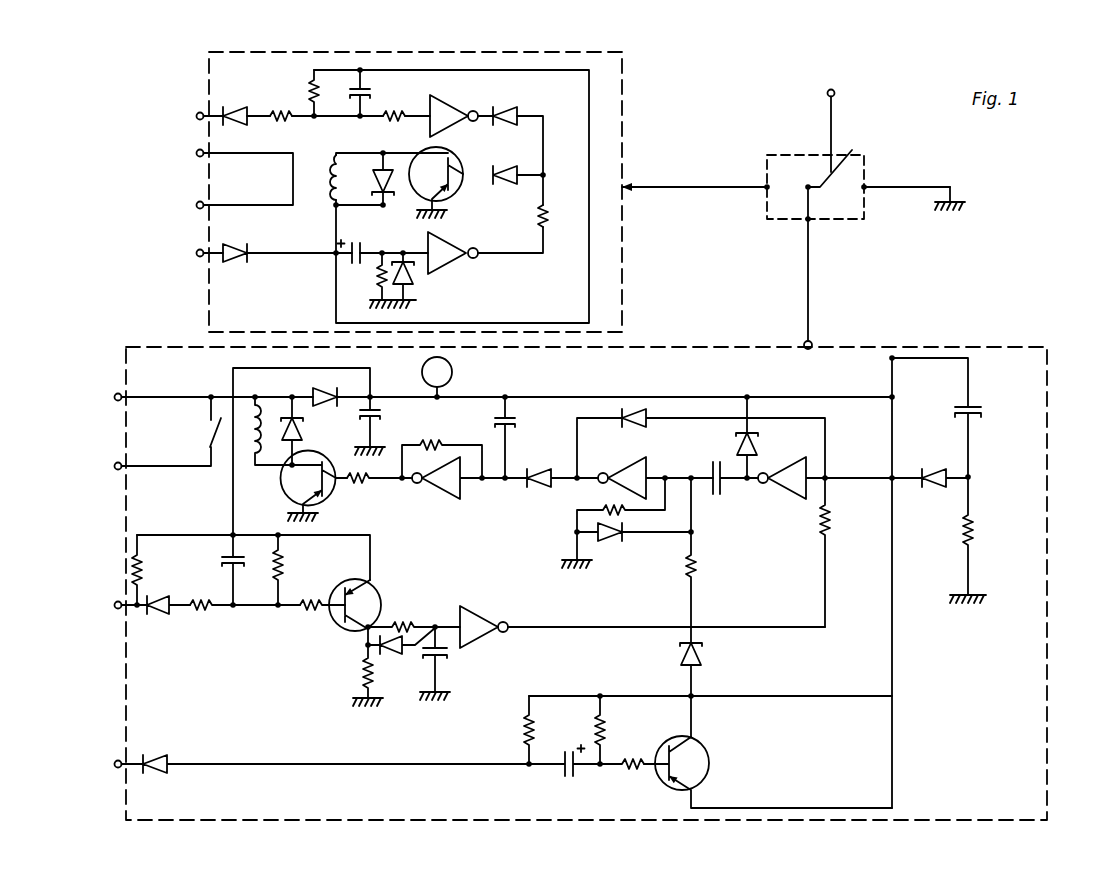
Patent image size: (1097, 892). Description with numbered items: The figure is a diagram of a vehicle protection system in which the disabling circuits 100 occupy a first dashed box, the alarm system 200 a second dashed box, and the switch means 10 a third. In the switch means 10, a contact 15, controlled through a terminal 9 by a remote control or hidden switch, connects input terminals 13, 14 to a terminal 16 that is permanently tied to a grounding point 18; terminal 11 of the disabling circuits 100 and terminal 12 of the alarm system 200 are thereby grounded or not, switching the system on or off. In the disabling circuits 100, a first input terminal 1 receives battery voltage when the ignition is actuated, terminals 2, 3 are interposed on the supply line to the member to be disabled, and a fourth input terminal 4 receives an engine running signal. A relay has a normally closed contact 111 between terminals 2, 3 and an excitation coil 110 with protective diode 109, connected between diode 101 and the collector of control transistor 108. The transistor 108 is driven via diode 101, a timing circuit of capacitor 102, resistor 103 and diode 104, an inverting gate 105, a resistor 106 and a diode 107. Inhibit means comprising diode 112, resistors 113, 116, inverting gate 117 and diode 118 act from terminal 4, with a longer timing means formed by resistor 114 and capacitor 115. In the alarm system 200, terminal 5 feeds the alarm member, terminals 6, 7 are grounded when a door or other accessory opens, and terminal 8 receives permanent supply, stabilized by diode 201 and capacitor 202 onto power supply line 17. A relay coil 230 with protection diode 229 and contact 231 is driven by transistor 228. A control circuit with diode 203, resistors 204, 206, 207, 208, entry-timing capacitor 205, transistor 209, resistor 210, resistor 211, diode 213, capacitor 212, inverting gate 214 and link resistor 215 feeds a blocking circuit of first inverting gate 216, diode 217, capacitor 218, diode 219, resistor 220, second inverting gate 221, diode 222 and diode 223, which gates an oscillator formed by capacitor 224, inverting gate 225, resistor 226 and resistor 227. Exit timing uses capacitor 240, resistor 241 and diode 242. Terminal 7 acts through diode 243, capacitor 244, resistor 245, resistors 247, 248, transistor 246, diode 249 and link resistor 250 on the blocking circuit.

The first input terminal 1 is at (187, 254).
The second input terminal 2 is at (187, 206).
The third input terminal 3 is at (187, 154).
The fourth input terminal 4 is at (187, 117).
The terminal 5 is at (105, 468).
The terminal 6 is at (105, 607).
The terminal 7 is at (105, 766).
The terminal 8 is at (105, 399).
The terminal 9 is at (835, 93).
The switch means 10 is at (790, 155).
The terminal 11 is at (629, 186).
The terminal 12 is at (813, 342).
The input terminal 13 is at (765, 191).
The input terminal 14 is at (805, 224).
The contact 15 is at (839, 169).
The terminal 16 is at (867, 186).
The positive power supply line 17 is at (451, 374).
The grounding point 18 is at (952, 200).
The disabling circuits 100 is at (209, 85).
The diode 101 is at (228, 269).
The capacitor 102 is at (369, 231).
The resistor 103 is at (380, 274).
The diode 104 is at (412, 285).
The inverting gate 105 is at (448, 245).
The resistor 106 is at (545, 227).
The diode 107 is at (512, 165).
The control transistor 108 is at (458, 160).
The protective diode 109 is at (376, 184).
The excitation coil 110 is at (333, 170).
The contact 111 is at (288, 182).
The diode 112 is at (225, 107).
The resistor 113 is at (286, 120).
The resistor 114 is at (312, 94).
The capacitor 115 is at (352, 93).
The resistor 116 is at (394, 120).
The inverting gate 117 is at (444, 106).
The diode 118 is at (525, 109).
The alarm system 200 is at (126, 373).
The diode 201 is at (312, 392).
The capacitor 202 is at (382, 410).
The diode 203 is at (157, 616).
The resistor 204 is at (203, 615).
The capacitor 205 is at (216, 570).
The resistor 206 is at (140, 570).
The resistor 207 is at (283, 570).
The resistor 208 is at (308, 615).
The transistor 209 is at (378, 590).
The resistor 210 is at (362, 668).
The resistor 211 is at (400, 620).
The capacitor 212 is at (440, 661).
The diode 213 is at (387, 655).
The inverting gate 214 is at (485, 617).
The link resistor 215 is at (822, 526).
The first inverting gate 216 is at (785, 458).
The diode 217 is at (745, 445).
The capacitor 218 is at (718, 490).
The diode 219 is at (605, 544).
The resistor 220 is at (607, 508).
The second inverting gate 221 is at (625, 465).
The diode 222 is at (650, 410).
The diode 223 is at (533, 470).
The capacitor 224 is at (511, 426).
The inverting gate 225 is at (448, 504).
The resistor 226 is at (437, 445).
The resistor 227 is at (357, 488).
The transistor 228 is at (283, 481).
The protection diode 229 is at (300, 430).
The excitation coil 230 is at (250, 441).
The contact 231 is at (211, 431).
The capacitor 240 is at (975, 407).
The resistor 241 is at (975, 542).
The diode 242 is at (930, 470).
The diode 243 is at (157, 756).
The capacitor 244 is at (576, 779).
The resistor 245 is at (633, 755).
The transistor 246 is at (710, 762).
The resistor 247 is at (524, 736).
The resistor 248 is at (596, 729).
The diode 249 is at (700, 658).
The link resistor 250 is at (696, 572).